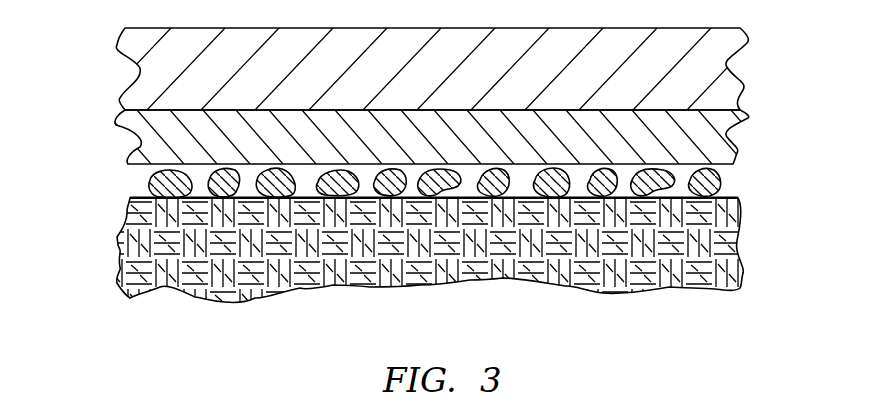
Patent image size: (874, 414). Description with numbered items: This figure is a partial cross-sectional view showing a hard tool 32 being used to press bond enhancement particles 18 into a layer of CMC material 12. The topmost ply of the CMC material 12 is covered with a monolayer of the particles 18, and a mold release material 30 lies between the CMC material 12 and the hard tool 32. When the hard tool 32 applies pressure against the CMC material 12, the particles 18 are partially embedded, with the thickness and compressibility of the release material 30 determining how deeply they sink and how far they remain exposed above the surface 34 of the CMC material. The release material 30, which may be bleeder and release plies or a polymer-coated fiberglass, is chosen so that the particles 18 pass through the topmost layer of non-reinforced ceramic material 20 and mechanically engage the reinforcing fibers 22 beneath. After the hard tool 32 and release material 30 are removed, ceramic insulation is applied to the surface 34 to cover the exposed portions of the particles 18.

The layer of CMC material 12 is at (739, 260).
The bond enhancement particles 18 is at (724, 177).
The topmost layer of non-reinforced ceramic material 20 is at (130, 202).
The reinforcing fibers 22 is at (227, 247).
The mold release material 30 is at (746, 123).
The hard tool 32 is at (745, 43).
The surface of the CMC material 34 is at (131, 197).